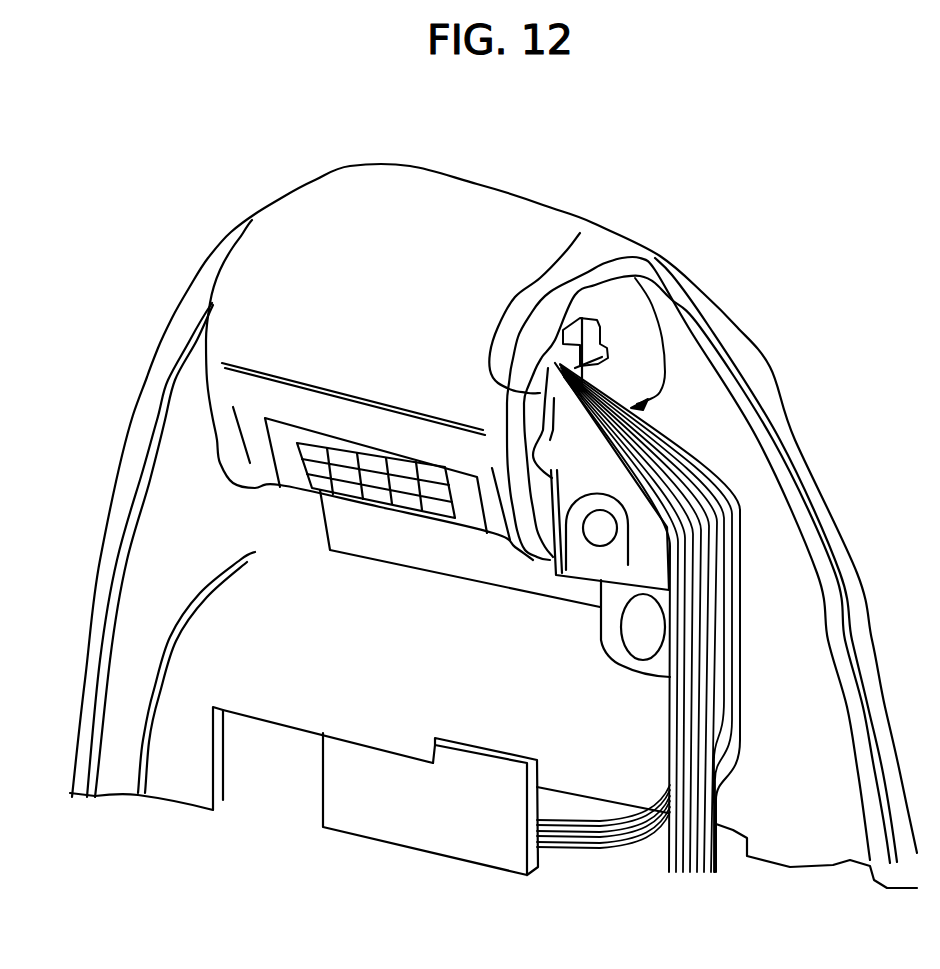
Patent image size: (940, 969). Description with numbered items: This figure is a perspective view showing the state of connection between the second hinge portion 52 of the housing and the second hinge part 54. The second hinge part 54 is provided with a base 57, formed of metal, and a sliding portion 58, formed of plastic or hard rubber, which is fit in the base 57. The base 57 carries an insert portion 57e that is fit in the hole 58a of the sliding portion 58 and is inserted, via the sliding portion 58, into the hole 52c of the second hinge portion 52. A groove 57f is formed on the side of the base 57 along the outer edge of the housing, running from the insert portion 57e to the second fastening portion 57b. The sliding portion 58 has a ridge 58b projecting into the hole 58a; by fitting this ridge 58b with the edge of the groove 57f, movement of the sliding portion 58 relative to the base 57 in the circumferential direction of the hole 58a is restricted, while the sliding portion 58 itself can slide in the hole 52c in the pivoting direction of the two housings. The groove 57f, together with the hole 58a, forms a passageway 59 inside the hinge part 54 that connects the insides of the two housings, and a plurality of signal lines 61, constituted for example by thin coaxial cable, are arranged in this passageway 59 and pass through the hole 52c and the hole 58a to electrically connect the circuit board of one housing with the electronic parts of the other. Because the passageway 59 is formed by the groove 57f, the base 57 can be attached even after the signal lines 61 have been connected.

The second hinge portion 52 is at (420, 353).
The hole 52c is at (605, 312).
The second hinge part 54 is at (735, 463).
The base 57 is at (736, 513).
The second fastening portion 57b is at (733, 500).
The insert portion 57e is at (592, 353).
The groove 57f is at (655, 445).
The sliding portion 58 is at (580, 233).
The hole 58a is at (635, 278).
The ridge 58b is at (600, 290).
The passageway 59 is at (655, 390).
The signal lines 61 is at (688, 475).